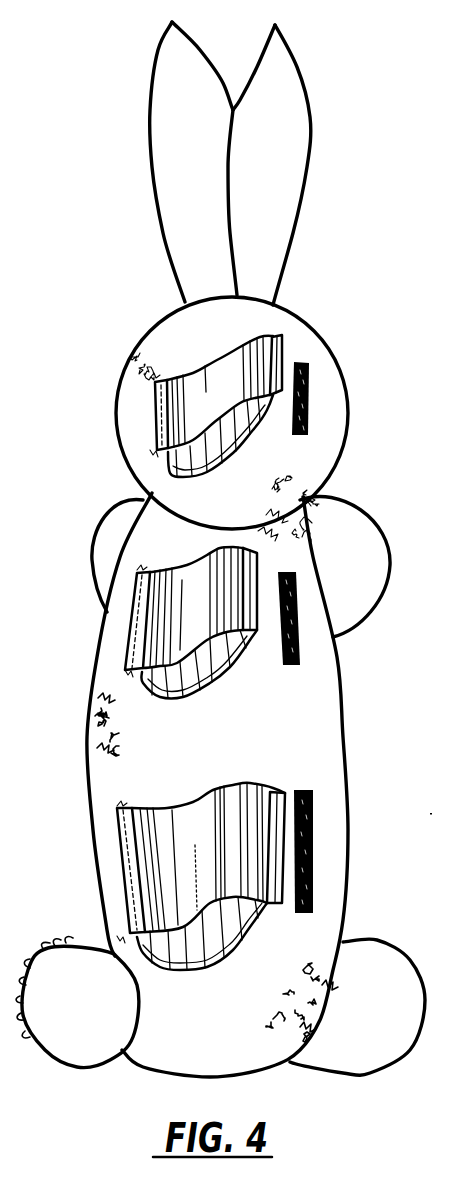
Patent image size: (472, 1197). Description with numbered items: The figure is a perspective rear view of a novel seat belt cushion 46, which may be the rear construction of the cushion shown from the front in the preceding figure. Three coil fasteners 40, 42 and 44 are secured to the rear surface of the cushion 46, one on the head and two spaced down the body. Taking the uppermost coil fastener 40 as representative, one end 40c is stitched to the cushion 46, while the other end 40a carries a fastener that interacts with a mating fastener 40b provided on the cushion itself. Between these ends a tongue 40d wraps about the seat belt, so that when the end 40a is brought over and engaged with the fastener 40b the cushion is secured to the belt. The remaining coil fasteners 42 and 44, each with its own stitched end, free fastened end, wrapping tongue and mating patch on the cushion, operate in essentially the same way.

The coil fastener 40 is at (231, 399).
The other end of the coil fastener 40a is at (277, 353).
The fastener on the cushion 40b is at (310, 397).
The one end of the coil fastener 40c is at (160, 427).
The tongue 40d is at (228, 447).
The coil fastener 42 is at (203, 593).
The coil fastener 44 is at (208, 830).
The seat belt cushion 46 is at (327, 730).